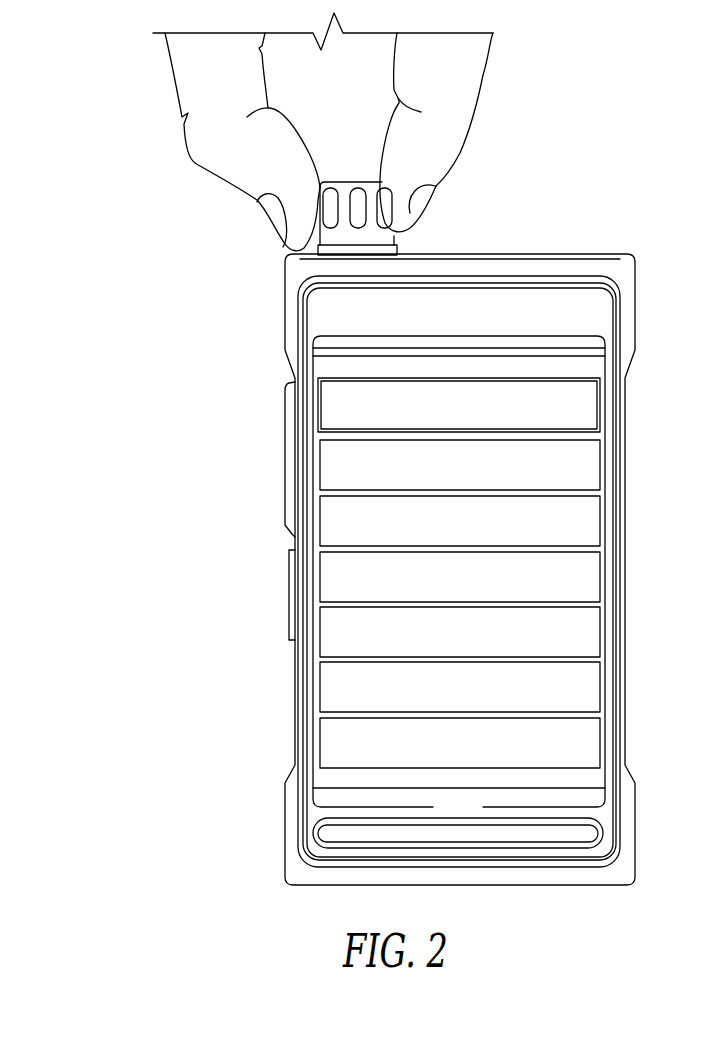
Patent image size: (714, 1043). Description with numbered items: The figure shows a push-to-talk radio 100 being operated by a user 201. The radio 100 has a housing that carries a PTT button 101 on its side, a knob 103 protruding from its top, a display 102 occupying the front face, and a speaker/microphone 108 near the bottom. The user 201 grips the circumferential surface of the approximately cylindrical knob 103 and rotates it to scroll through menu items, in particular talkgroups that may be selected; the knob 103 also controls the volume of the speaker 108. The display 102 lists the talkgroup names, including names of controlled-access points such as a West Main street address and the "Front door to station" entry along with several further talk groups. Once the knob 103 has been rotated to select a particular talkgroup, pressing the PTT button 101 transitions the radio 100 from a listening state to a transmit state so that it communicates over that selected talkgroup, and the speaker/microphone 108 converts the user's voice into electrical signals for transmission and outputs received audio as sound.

The push-to-talk radio 100 is at (73, 43).
The PTT button 101 is at (285, 473).
The display 102 is at (479, 817).
The knob 103 is at (372, 182).
The speaker/microphone 108 is at (340, 833).
The user 201 is at (456, 72).